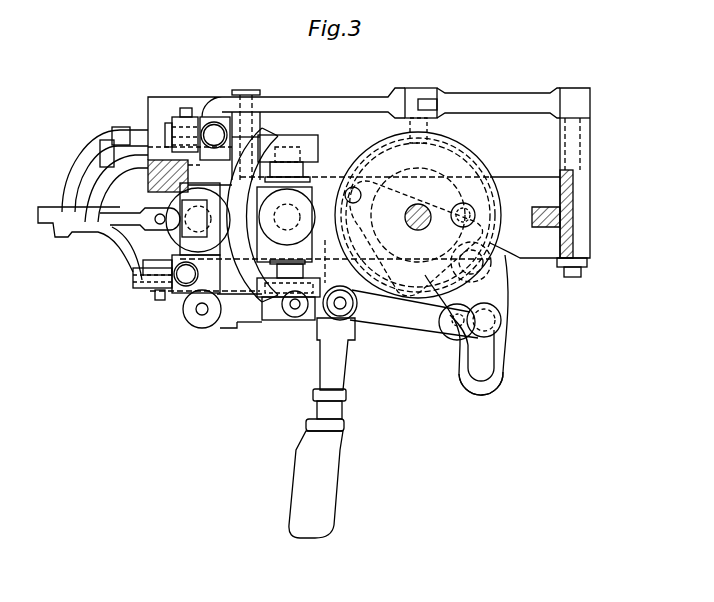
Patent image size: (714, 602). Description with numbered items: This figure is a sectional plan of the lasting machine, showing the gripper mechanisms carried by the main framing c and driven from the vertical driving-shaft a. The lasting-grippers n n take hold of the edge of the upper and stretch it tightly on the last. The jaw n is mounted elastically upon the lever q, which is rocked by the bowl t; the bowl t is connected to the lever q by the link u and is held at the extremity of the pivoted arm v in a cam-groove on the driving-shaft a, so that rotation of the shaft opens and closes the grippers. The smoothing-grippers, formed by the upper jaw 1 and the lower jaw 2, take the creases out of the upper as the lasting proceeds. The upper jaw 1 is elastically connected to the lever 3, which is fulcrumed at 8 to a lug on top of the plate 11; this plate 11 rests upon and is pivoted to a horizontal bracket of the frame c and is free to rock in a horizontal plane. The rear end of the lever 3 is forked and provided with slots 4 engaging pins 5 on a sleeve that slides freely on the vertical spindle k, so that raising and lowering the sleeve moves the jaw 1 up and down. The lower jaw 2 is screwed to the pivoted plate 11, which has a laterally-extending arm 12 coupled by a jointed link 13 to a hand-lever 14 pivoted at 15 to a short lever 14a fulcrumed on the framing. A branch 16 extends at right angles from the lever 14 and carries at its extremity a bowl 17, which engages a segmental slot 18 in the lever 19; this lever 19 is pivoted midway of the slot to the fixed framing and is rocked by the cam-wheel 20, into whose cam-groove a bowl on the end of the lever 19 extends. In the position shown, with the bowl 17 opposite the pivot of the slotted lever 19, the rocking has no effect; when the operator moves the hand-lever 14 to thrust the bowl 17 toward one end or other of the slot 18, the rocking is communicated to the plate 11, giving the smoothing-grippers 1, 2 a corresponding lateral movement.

The lever q is at (311, 100).
The link u is at (421, 104).
The pivoted arm v is at (500, 98).
The bowl t is at (428, 128).
The main framing c is at (540, 182).
The cam-wheel 20 is at (416, 232).
The vertical driving-shaft a is at (419, 205).
The lasting-grippers n is at (70, 182).
The upper jaw 1 is at (75, 233).
The lower jaw 2 is at (118, 213).
The fulcrum 8 is at (198, 219).
The lever 3 is at (252, 215).
The slots 4 is at (300, 150).
The vertical spindle k is at (286, 224).
The pins 5 is at (300, 172).
The pivoted plate 11 is at (175, 238).
The laterally-extending arm 12 is at (200, 290).
The jointed link 13 is at (255, 312).
The hand-lever 14 is at (335, 373).
The short lever 14a is at (340, 295).
The pivot 15 is at (348, 305).
The branch 16 is at (407, 320).
The bowl 17 is at (500, 319).
The segmental slot 18 is at (486, 366).
The lever 19 is at (490, 388).